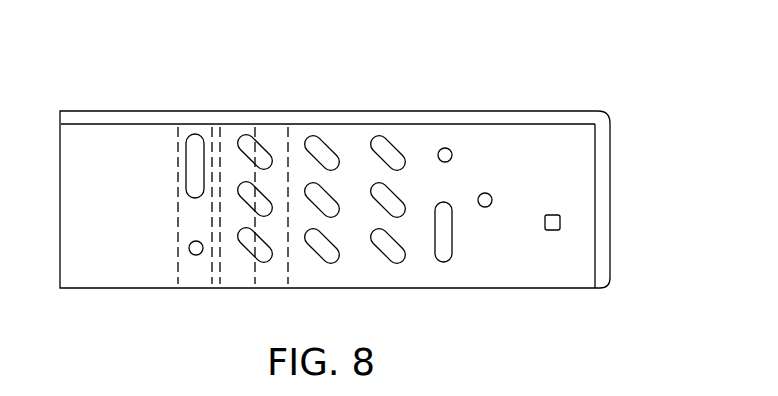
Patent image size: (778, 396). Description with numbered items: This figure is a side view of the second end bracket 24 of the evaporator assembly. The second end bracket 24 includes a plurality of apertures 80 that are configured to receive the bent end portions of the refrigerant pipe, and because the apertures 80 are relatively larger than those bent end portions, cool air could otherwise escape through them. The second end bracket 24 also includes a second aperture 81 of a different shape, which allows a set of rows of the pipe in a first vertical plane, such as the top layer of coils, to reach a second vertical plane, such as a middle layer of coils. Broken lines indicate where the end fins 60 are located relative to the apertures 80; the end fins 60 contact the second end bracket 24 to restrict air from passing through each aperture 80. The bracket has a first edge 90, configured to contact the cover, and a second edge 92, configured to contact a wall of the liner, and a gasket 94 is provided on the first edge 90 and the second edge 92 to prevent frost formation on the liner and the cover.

The second end bracket 24 is at (87, 253).
The end fins 60 is at (186, 282).
The apertures 80 is at (317, 131).
The second aperture 81 is at (187, 172).
The first edge 90 is at (107, 128).
The second edge 92 is at (595, 187).
The gasket 94 is at (497, 111).